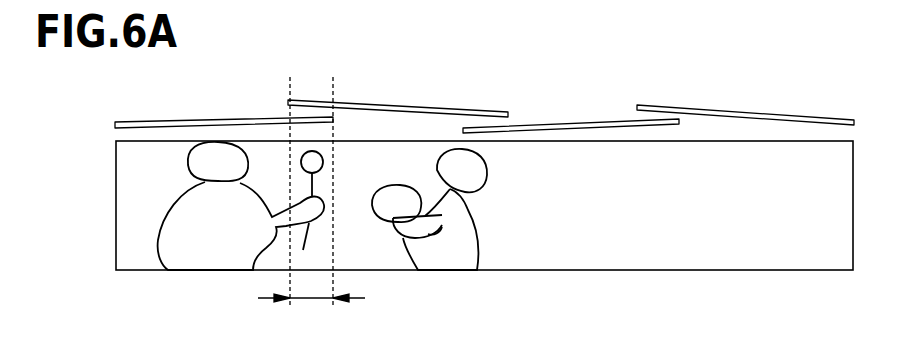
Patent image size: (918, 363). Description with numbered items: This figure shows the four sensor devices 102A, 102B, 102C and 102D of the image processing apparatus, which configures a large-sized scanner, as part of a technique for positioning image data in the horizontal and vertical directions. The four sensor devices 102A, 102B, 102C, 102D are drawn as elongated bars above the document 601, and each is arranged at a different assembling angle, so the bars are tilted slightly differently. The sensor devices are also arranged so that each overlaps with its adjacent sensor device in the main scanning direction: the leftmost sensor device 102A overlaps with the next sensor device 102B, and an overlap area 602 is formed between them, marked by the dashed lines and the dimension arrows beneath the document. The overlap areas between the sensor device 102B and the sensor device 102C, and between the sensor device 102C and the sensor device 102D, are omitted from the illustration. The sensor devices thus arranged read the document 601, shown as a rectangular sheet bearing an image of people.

The sensor device 102A is at (190, 118).
The sensor device 102B is at (393, 104).
The sensor device 102C is at (562, 127).
The sensor device 102D is at (742, 112).
The document 601 is at (740, 272).
The overlap area 602 is at (312, 300).